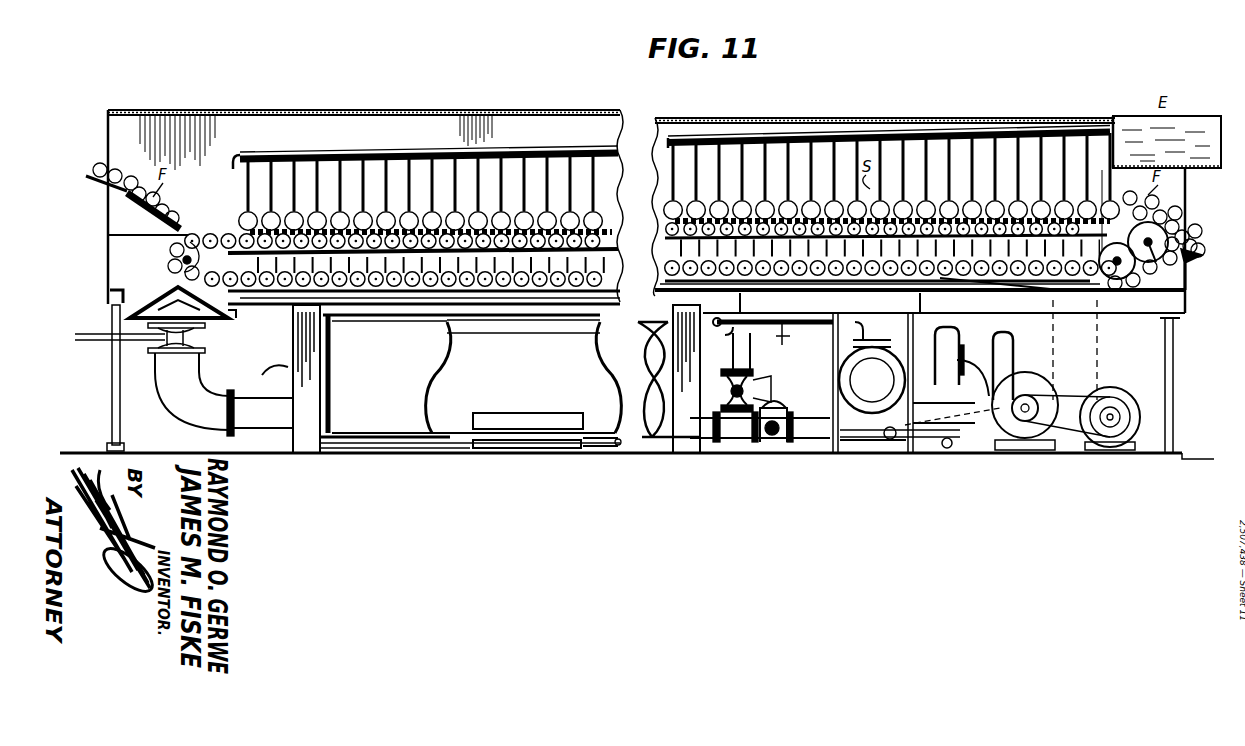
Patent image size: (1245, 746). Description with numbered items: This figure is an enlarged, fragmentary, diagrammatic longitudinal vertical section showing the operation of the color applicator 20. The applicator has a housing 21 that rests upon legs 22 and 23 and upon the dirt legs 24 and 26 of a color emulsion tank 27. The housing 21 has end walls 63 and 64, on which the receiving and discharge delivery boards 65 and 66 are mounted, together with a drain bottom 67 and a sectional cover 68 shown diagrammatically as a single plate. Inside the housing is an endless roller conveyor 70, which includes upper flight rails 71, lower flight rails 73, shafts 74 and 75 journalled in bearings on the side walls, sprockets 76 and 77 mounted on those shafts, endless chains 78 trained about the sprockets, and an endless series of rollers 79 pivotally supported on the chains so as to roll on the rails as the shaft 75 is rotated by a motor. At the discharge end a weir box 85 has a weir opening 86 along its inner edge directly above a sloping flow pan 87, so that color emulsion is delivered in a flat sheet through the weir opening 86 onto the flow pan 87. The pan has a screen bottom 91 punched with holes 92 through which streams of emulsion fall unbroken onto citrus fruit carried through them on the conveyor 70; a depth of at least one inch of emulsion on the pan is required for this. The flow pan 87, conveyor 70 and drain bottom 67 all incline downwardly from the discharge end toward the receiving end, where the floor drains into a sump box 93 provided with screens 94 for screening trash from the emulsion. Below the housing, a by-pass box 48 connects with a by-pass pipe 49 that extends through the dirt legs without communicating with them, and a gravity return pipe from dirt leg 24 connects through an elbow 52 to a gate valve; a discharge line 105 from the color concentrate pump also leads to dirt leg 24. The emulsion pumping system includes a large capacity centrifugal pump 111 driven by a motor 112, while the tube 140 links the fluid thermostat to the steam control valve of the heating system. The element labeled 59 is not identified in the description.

The color applicator 20 is at (932, 78).
The housing 21 is at (822, 114).
The leg 22 is at (112, 371).
The leg 23 is at (1173, 358).
The dirt leg 24 is at (314, 394).
The dirt leg 26 is at (682, 390).
The color emulsion tank 27 is at (390, 416).
The by-pass box 48 is at (520, 422).
The by-pass pipe 49 is at (607, 447).
The elbow 52 is at (190, 404).
The valve 59 is at (207, 340).
The end wall 63 is at (108, 255).
The end wall 64 is at (1186, 298).
The receiving delivery board 65 is at (94, 182).
The discharge delivery board 66 is at (1205, 255).
The drain bottom 67 is at (750, 292).
The sectional cover 68 is at (502, 113).
The endless roller conveyor 70 is at (470, 245).
The upper flight rails 71 is at (892, 196).
The lower flight rails 73 is at (924, 284).
The shaft 74 is at (168, 263).
The shaft 75 is at (1156, 240).
The sprocket 76 is at (185, 274).
The sprocket 77 is at (1117, 259).
The endless chains 78 is at (170, 250).
The rollers 79 is at (246, 280).
The weir box 85 is at (1195, 118).
The weir opening 86 is at (1113, 118).
The flow pan 87 is at (1006, 134).
The screen bottom 91 is at (372, 163).
The holes 92 is at (340, 160).
The sump box 93 is at (108, 293).
The screens 94 is at (183, 302).
The discharge line 105 is at (264, 361).
The centrifugal pump 111 is at (1033, 393).
The motor 112 is at (1112, 395).
The tube 140 is at (761, 380).